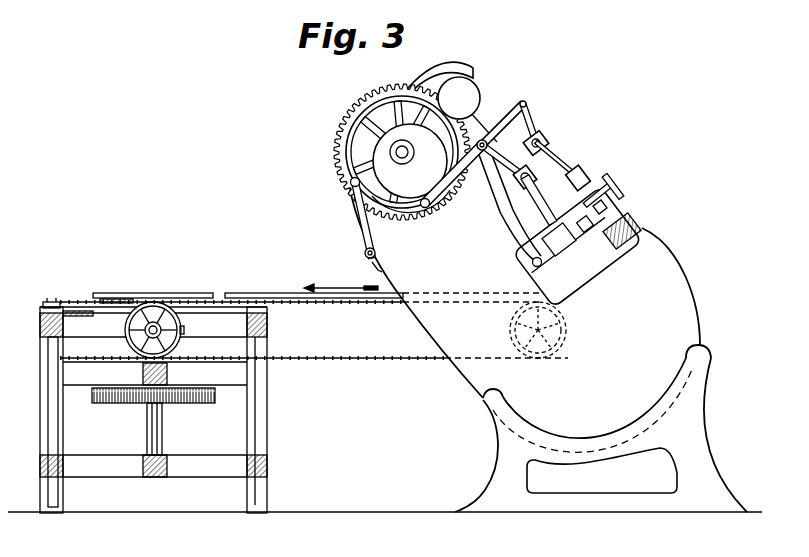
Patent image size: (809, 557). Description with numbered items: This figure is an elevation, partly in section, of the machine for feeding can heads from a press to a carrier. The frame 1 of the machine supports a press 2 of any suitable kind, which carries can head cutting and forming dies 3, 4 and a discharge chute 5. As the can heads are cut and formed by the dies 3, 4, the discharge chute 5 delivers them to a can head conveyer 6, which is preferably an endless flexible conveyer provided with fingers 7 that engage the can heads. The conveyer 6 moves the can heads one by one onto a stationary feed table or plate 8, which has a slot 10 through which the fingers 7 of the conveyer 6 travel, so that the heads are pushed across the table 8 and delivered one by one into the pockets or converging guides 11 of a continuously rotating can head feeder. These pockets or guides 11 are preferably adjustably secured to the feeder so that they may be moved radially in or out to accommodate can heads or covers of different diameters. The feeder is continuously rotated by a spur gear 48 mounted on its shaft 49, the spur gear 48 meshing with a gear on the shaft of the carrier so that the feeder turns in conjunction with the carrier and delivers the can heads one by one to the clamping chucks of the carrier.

The frame 1 is at (45, 323).
The press 2 is at (407, 153).
The can head cutting and forming die 3 is at (579, 247).
The can head cutting and forming die 4 is at (547, 228).
The discharge chute 5 is at (552, 267).
The can head conveyer 6 is at (397, 303).
The fingers 7 is at (350, 359).
The stationary feed table or plate 8 is at (111, 306).
The slot 10 is at (192, 309).
The pockets or converging guides 11 is at (120, 293).
The spur gear 48 is at (104, 401).
The shaft 49 is at (163, 426).